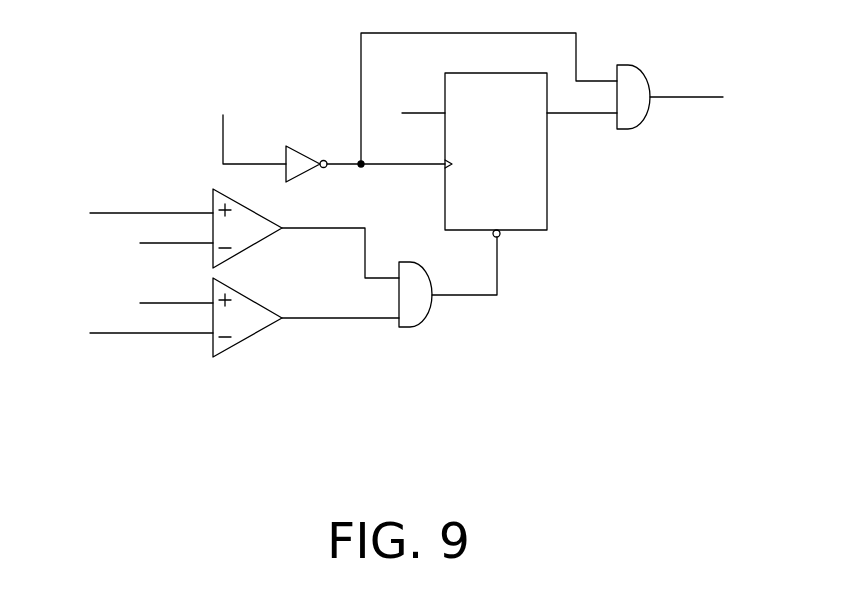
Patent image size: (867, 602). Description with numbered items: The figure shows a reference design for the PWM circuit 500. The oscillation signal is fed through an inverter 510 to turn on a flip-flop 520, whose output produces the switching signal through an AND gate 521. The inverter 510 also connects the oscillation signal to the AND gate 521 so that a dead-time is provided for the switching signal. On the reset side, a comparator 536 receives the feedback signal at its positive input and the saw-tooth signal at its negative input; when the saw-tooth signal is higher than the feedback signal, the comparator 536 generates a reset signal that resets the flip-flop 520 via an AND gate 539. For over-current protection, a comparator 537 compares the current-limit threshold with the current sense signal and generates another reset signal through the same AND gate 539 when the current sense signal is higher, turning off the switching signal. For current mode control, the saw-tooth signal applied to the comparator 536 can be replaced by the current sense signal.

The PWM circuit 500 is at (410, 243).
The inverter 510 is at (306, 148).
The flip-flop 520 is at (549, 181).
The AND gate 521 is at (637, 127).
The comparator 536 is at (253, 247).
The comparator 537 is at (252, 338).
The AND gate 539 is at (413, 326).